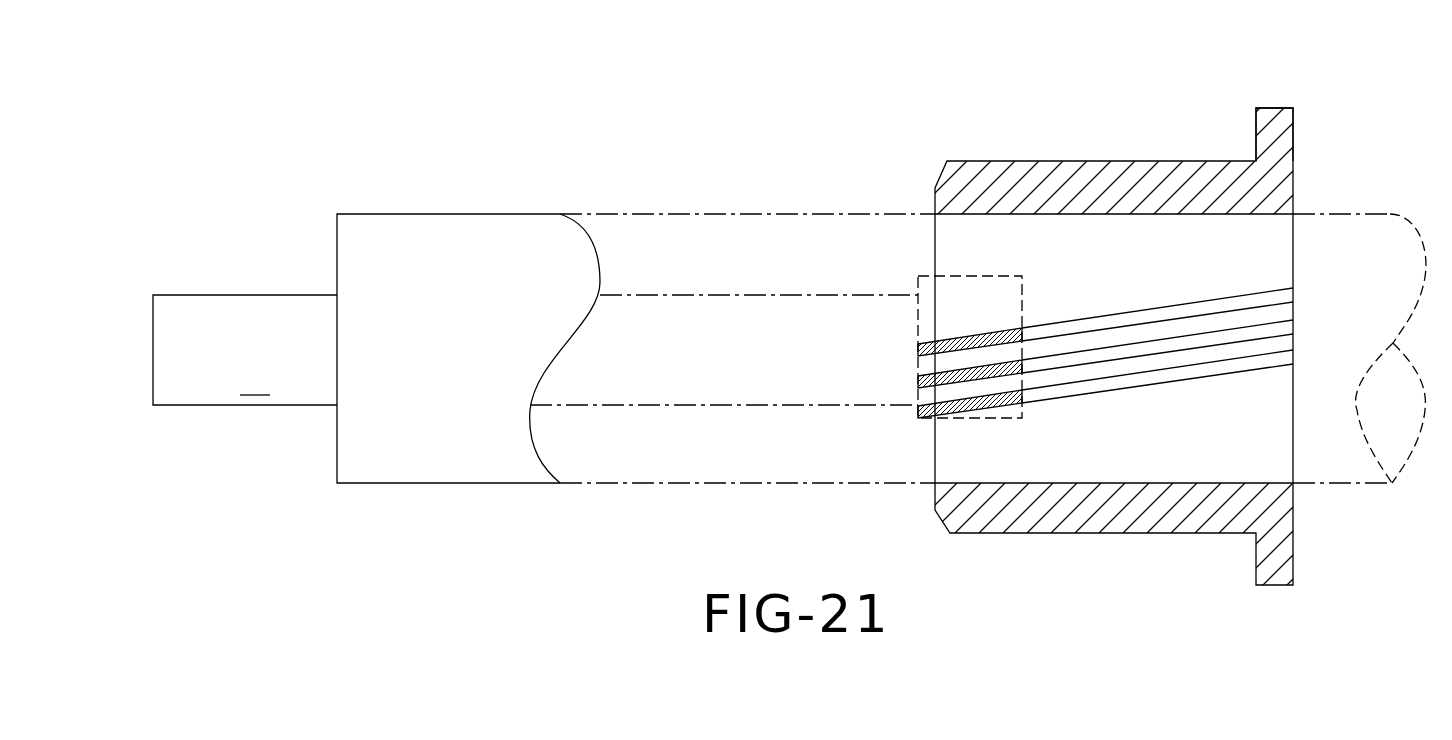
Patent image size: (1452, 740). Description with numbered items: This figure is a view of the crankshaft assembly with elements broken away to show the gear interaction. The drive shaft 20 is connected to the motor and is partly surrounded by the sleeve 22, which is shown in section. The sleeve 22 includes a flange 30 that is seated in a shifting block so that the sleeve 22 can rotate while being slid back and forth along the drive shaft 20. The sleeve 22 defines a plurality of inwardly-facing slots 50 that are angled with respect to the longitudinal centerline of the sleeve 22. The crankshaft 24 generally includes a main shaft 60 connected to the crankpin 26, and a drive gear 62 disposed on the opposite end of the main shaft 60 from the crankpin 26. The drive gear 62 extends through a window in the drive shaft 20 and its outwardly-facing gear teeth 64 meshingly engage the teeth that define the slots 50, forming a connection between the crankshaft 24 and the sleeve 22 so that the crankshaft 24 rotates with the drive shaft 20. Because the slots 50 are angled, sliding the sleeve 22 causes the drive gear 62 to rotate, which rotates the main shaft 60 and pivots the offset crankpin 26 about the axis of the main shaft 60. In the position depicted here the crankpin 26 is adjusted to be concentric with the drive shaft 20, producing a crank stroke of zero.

The drive shaft 20 is at (487, 225).
The sleeve 22 is at (1042, 162).
The crankshaft 24 is at (250, 400).
The crankpin 26 is at (250, 308).
The flange 30 is at (1273, 112).
The inwardly-facing slots 50 is at (1153, 310).
The main shaft 60 is at (756, 292).
The drive gear 62 is at (972, 276).
The gear teeth 64 is at (921, 348).